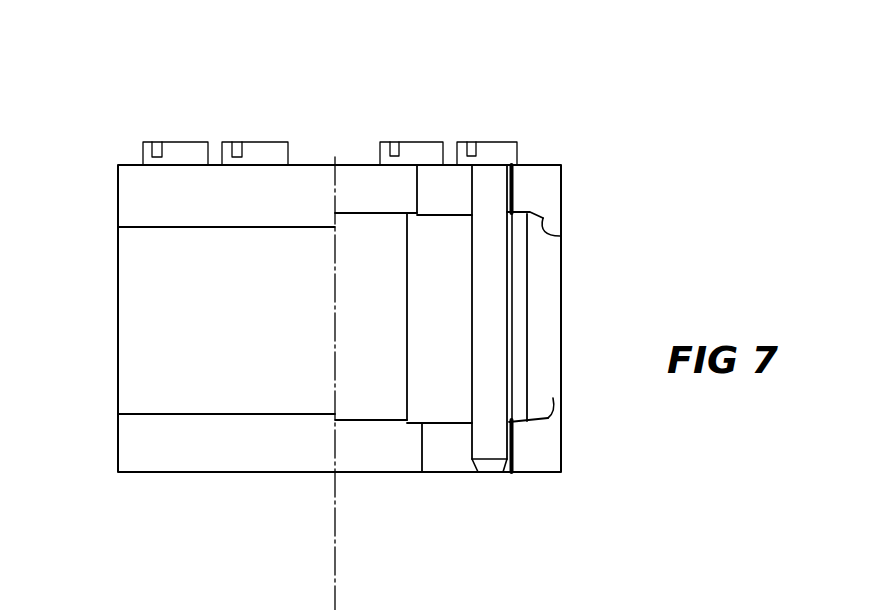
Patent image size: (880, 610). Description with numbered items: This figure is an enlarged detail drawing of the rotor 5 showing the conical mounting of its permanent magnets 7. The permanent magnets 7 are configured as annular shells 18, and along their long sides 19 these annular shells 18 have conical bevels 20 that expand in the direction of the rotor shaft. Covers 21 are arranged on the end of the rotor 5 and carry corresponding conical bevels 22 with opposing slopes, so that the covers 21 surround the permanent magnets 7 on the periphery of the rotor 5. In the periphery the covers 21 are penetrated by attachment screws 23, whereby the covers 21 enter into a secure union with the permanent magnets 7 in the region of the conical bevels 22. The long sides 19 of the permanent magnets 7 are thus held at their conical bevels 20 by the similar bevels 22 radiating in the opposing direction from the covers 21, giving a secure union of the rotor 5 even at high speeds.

The rotor 5 is at (516, 100).
The permanent magnets 7 is at (543, 318).
The annular shells 18 is at (232, 315).
The long sides 19 is at (546, 207).
The conical bevels 20 is at (630, 313).
The covers 21 is at (535, 180).
The conical bevels 22 is at (558, 232).
The attachment screws 23 is at (487, 291).